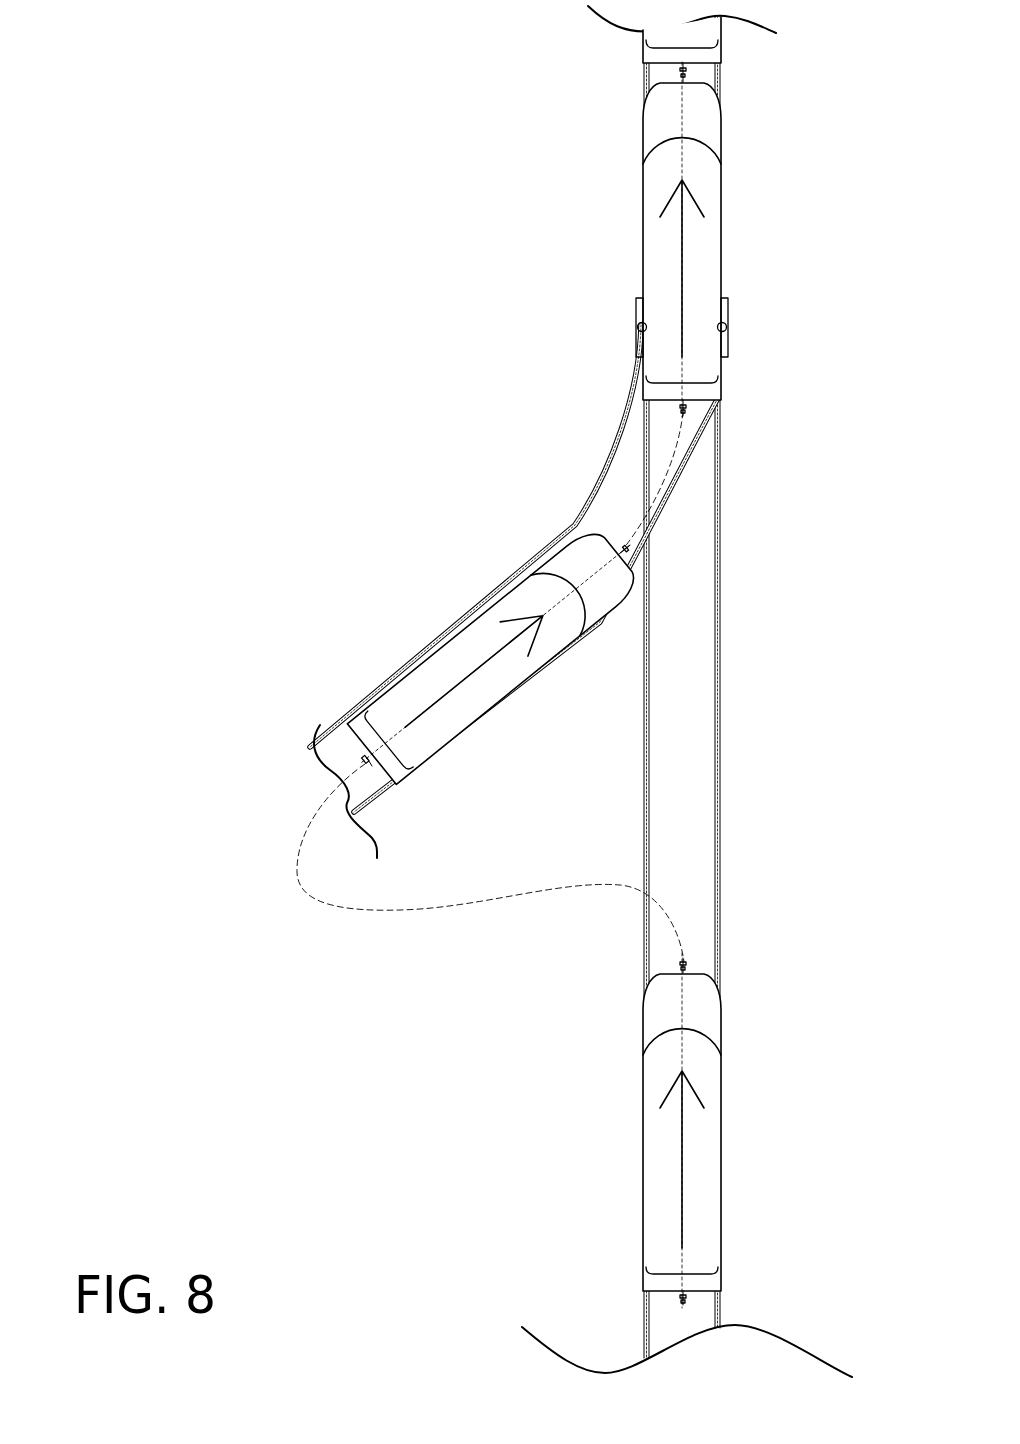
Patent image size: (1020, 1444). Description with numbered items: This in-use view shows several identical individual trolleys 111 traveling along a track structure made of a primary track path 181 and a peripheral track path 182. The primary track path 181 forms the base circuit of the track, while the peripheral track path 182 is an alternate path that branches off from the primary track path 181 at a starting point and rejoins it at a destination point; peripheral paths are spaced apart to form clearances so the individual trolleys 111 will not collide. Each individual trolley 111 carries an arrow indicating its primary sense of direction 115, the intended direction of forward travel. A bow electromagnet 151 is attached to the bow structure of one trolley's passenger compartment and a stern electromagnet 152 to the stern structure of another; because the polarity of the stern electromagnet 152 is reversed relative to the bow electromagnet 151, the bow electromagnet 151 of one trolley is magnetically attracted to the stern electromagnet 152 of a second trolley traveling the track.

The individual trolley 111 is at (713, 285).
The primary sense of direction 115 is at (683, 255).
The bow electromagnet 151 is at (364, 766).
The stern electromagnet 152 is at (687, 970).
The primary track path 181 is at (693, 801).
The peripheral track path 182 is at (597, 485).